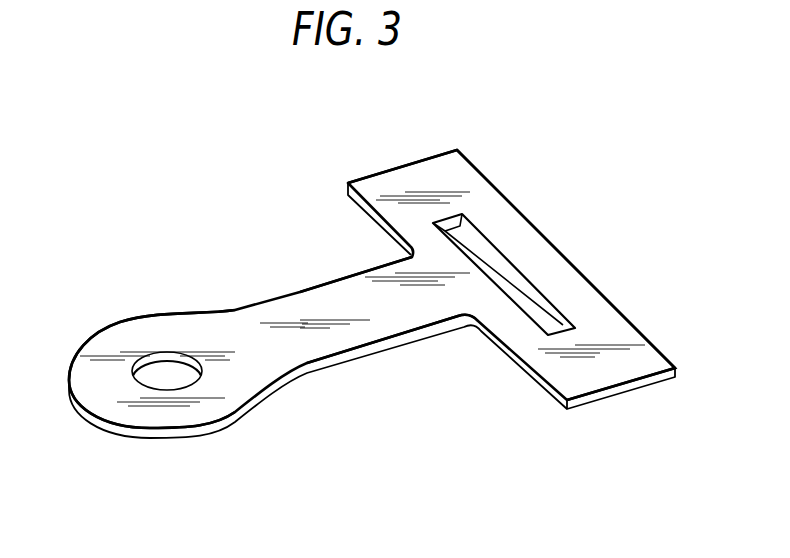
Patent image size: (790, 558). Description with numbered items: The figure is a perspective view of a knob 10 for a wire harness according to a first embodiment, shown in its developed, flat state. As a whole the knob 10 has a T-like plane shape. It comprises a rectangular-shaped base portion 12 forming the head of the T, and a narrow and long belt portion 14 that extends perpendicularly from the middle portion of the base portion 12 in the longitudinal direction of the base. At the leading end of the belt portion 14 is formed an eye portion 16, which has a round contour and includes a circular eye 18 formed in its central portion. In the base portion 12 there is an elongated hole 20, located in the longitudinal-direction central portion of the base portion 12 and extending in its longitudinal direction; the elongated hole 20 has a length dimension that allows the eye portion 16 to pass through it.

The knob 10 is at (259, 173).
The base portion 12 is at (458, 167).
The belt portion 14 is at (410, 310).
The eye portion 16 is at (128, 335).
The eye 18 is at (162, 375).
The elongated hole 20 is at (520, 278).